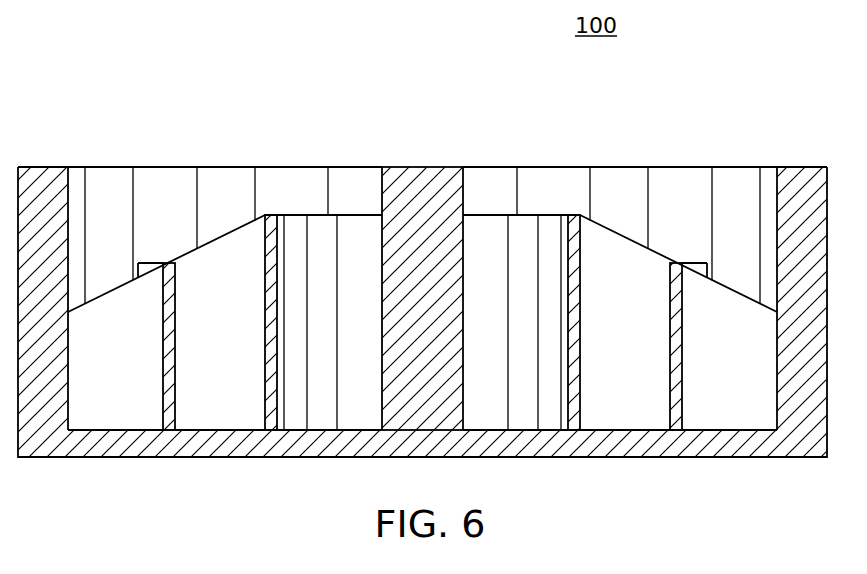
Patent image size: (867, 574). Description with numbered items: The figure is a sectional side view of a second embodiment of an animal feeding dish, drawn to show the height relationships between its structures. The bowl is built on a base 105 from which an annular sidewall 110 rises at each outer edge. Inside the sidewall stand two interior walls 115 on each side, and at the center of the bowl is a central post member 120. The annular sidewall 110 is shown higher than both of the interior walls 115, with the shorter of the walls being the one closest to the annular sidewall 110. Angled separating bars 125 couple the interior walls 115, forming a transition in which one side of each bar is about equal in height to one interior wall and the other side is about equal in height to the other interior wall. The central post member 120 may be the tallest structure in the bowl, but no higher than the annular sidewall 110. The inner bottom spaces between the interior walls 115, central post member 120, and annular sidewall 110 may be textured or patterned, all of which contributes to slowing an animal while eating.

The base 105 is at (197, 458).
The annular sidewall 110 is at (42, 167).
The interior walls 115 is at (580, 385).
The central post member 120 is at (423, 167).
The separating bars 125 is at (233, 230).